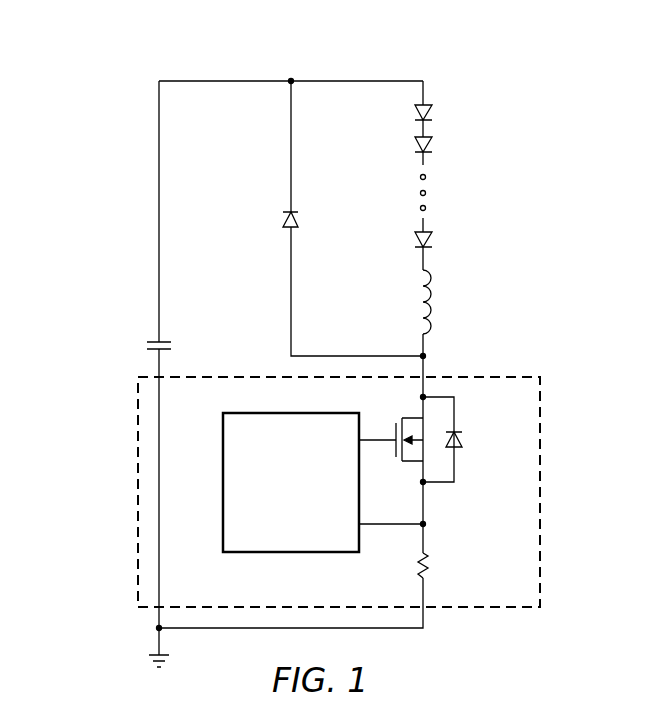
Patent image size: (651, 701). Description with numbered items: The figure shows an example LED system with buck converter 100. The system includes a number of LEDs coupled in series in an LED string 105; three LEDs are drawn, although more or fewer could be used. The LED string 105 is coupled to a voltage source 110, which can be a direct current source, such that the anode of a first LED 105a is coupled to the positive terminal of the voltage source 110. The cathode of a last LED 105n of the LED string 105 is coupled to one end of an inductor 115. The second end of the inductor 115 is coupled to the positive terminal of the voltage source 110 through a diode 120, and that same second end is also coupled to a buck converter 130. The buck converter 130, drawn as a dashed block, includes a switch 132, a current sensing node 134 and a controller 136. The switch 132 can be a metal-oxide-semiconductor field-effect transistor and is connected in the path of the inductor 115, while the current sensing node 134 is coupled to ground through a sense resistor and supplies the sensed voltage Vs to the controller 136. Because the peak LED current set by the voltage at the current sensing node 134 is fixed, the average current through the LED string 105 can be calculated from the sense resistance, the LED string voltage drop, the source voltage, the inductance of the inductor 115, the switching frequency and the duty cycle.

The LED system with buck converter 100 is at (196, 62).
The LED string 105 is at (428, 174).
The first LED 105a is at (414, 112).
The last LED 105n is at (414, 237).
The voltage source 110 is at (172, 343).
The inductor 115 is at (428, 281).
The diode 120 is at (276, 217).
The buck converter 130 is at (137, 522).
The switch 132 is at (463, 437).
The current sensing node 134 is at (417, 570).
The controller 136 is at (310, 518).